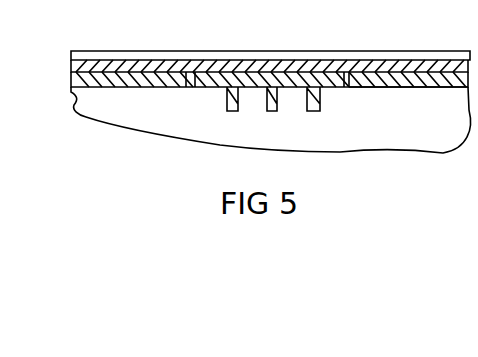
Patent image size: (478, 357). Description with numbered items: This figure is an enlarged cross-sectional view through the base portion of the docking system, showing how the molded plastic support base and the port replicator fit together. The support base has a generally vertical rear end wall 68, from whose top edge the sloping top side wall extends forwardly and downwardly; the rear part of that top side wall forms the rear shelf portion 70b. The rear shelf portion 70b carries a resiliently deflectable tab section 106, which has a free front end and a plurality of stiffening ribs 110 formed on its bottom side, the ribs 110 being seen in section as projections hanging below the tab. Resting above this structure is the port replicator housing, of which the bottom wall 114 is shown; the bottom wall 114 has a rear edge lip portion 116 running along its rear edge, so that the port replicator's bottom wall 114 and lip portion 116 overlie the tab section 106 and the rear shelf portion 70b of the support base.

The rear end wall 68 is at (438, 137).
The rear edge lip portion 116 is at (160, 51).
The resiliently deflectable tab section 106 is at (281, 77).
The bottom wall 114 is at (386, 64).
The rear shelf portion 70b is at (394, 87).
The stiffening ribs 110 is at (268, 108).